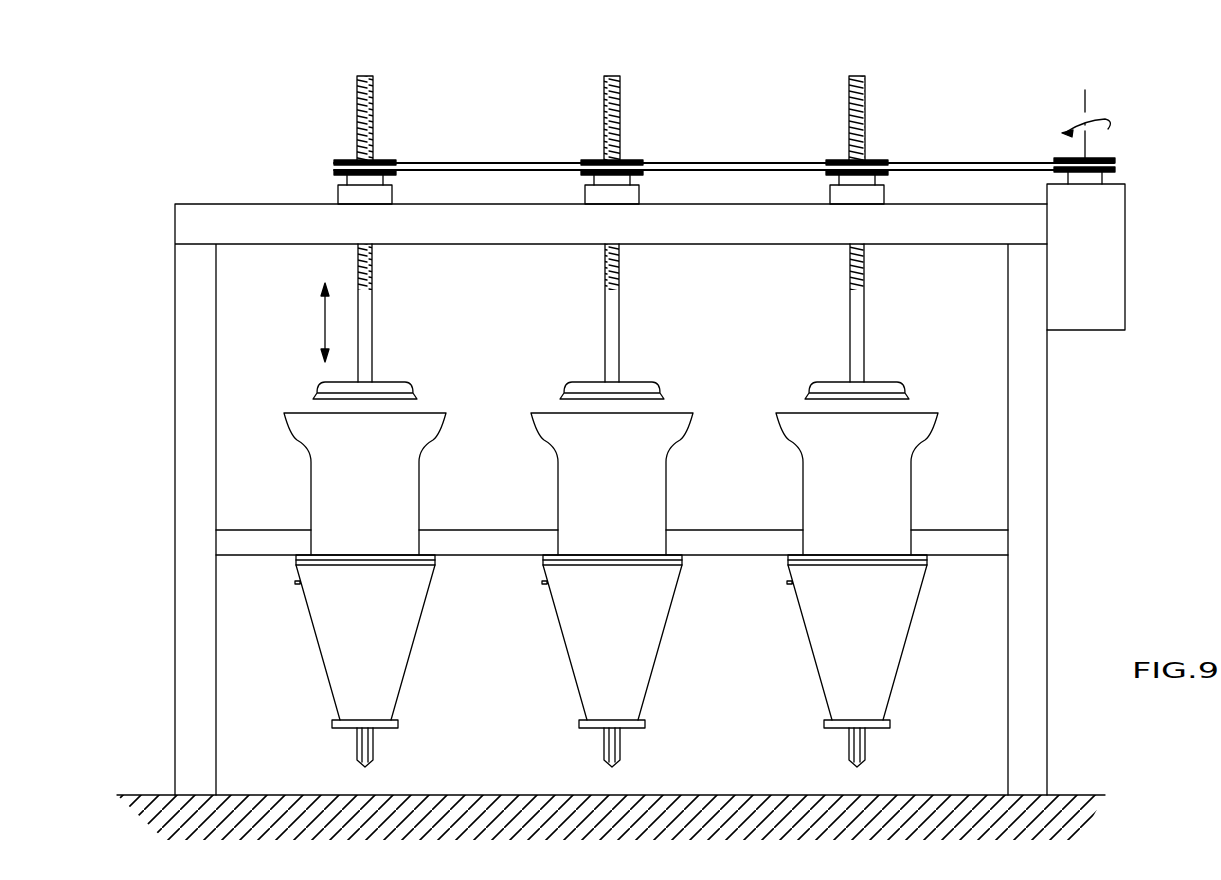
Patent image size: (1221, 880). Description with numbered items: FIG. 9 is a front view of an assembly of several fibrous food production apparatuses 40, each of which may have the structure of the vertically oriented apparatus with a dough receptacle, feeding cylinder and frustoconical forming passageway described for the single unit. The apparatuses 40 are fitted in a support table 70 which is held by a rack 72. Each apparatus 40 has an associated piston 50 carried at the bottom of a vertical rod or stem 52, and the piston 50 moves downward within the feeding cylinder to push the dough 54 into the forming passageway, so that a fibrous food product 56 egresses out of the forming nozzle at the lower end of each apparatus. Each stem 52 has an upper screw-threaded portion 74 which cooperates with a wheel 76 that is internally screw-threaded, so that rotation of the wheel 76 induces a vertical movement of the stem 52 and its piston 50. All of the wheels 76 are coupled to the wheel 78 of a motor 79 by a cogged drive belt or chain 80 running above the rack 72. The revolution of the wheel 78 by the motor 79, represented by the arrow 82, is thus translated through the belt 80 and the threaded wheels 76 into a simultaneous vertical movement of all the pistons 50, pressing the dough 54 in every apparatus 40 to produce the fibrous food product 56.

The fibrous food production apparatus 40 is at (349, 452).
The piston 50 is at (384, 388).
The rod 52 is at (367, 345).
The dough 54 is at (325, 320).
The fibrous food product 56 is at (849, 745).
The support table 70 is at (970, 528).
The rack 72 is at (1037, 396).
The upper screw-threaded portion 74 is at (375, 247).
The wheel 76 is at (345, 160).
The wheel of motor 78 is at (1115, 163).
The motor 79 is at (1125, 244).
The cogged drive belt or chain 80 is at (944, 167).
The arrow 82 is at (1110, 123).